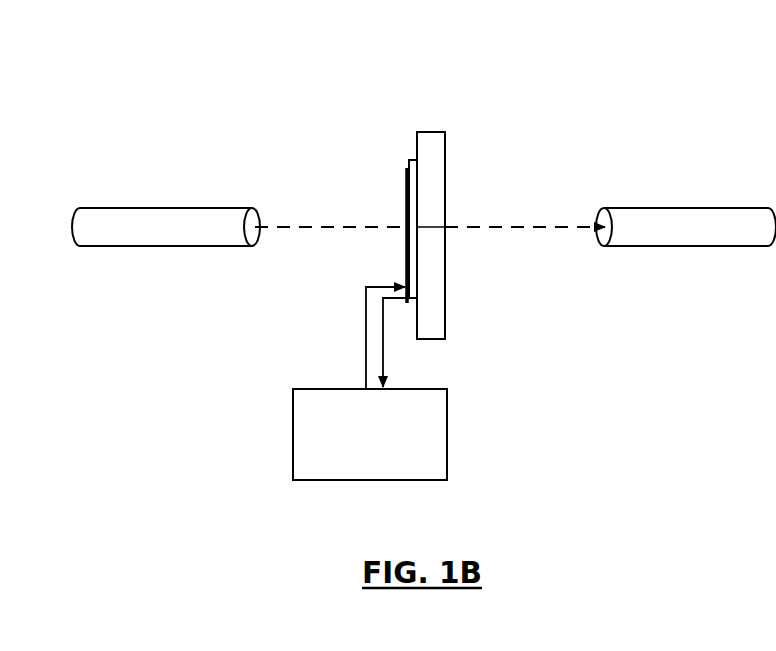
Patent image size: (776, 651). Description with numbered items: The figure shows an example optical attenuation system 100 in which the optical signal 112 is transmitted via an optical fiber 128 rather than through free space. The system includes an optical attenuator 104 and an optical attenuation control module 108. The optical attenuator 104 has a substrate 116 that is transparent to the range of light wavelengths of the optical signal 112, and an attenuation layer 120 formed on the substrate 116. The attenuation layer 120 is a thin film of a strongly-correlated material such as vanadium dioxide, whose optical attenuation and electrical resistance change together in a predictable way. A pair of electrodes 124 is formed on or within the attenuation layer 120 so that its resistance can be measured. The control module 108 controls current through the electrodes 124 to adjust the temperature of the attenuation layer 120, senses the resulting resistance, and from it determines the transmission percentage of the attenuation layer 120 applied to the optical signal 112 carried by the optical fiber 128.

The optical attenuation system 100 is at (256, 119).
The optical attenuator 104 is at (388, 99).
The optical attenuation control module 108 is at (293, 436).
The optical signal 112 is at (318, 228).
The substrate 116 is at (445, 172).
The attenuation layer 120 is at (409, 163).
The electrodes 124 is at (407, 247).
The optical fiber 128 is at (135, 245).